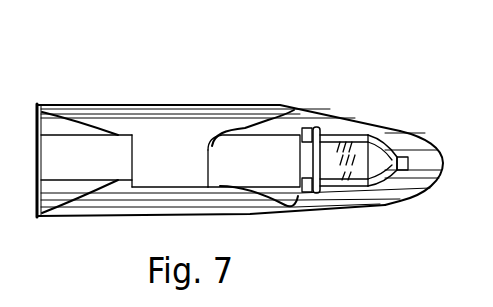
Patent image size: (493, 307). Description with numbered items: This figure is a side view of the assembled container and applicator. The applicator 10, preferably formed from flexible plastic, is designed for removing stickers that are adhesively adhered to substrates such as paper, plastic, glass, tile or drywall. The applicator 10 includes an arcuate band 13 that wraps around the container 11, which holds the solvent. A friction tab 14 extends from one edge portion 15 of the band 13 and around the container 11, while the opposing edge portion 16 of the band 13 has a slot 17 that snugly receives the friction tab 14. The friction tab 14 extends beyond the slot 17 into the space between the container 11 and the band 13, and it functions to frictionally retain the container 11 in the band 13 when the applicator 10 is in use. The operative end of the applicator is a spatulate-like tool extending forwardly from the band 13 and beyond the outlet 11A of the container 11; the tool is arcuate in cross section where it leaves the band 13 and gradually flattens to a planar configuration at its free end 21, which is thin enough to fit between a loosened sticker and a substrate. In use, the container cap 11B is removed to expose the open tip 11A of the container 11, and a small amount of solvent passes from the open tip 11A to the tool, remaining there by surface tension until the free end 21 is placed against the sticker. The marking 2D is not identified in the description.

The applicator 10 is at (192, 88).
The container 11 is at (281, 128).
The container outlet tip 11A is at (383, 145).
The container cap 11B is at (356, 138).
The arcuate band 13 is at (235, 198).
The friction tab 14 is at (203, 158).
The edge portion 15 is at (128, 137).
The opposing edge portion 16 is at (118, 181).
The slot 17 is at (150, 187).
The free end of tool 21 is at (447, 165).
The diameter 2D is at (358, 196).